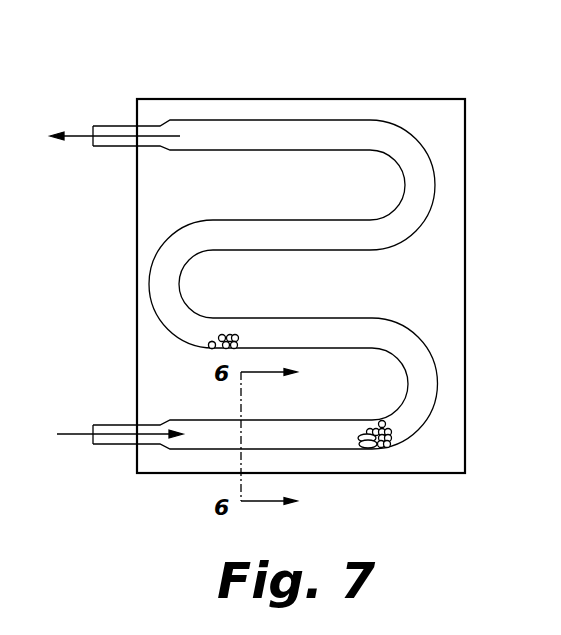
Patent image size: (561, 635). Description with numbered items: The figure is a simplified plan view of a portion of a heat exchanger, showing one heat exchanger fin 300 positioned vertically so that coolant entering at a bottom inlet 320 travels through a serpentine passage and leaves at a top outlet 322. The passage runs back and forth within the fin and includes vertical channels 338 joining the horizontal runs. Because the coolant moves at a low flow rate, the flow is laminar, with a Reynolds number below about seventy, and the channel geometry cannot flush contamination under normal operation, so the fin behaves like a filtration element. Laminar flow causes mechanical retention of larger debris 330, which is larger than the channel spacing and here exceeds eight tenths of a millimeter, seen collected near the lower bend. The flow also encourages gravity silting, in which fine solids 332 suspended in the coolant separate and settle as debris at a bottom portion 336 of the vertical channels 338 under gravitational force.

The heat exchanger fin 300 is at (289, 99).
The bottom inlet 320 is at (120, 447).
The top outlet 322 is at (117, 125).
The larger debris 330 is at (366, 449).
The fine solids 332 is at (393, 440).
The bottom portion 336 is at (216, 349).
The vertical channels 338 is at (149, 284).